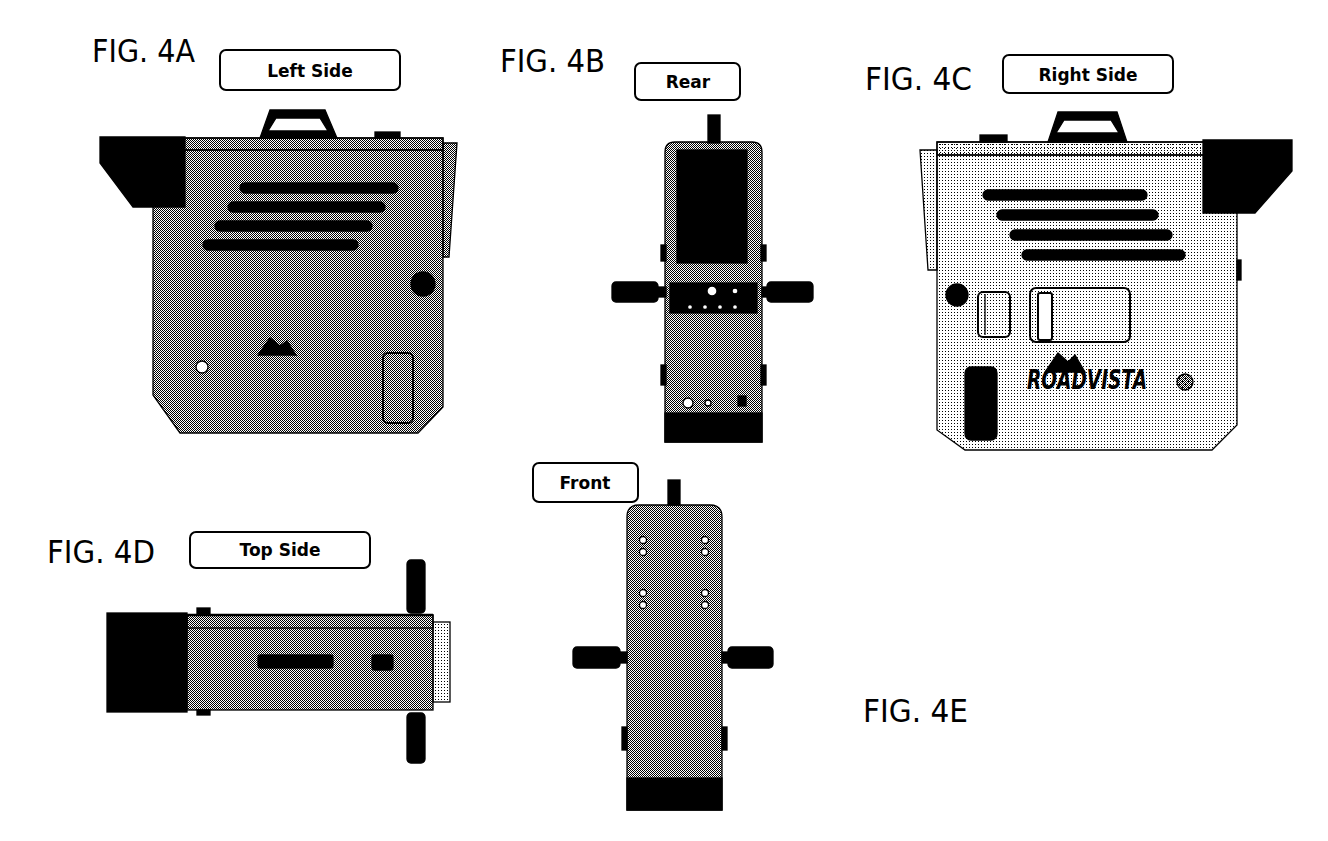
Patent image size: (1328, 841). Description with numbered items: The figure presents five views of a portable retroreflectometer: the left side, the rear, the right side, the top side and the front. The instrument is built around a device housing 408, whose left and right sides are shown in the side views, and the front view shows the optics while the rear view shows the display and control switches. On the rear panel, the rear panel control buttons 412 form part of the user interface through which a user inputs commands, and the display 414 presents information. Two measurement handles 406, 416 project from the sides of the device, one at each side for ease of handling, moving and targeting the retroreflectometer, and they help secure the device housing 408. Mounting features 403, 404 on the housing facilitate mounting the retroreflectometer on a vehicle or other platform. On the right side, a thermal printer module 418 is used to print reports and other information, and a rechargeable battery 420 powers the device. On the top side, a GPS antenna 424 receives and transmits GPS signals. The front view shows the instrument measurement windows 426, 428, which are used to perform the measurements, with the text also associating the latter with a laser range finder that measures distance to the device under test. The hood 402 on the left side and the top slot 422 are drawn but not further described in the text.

In FIG. 4A, the protective hood / visor 402 is at (95, 177).
In FIG. 4A, the mounting feature 403 is at (193, 370).
In FIG. 4A, the mounting feature 404 is at (390, 397).
In FIG. 4A, the measurement handle 406 is at (432, 289).
In FIG. 4A, the device housing 408 is at (442, 177).
In FIG. 4B, the rear panel control buttons 412 is at (695, 293).
In FIG. 4B, the display 414 is at (725, 213).
In FIG. 4B, the measurement handle 416 is at (782, 290).
In FIG. 4C, the thermal printer module 418 is at (970, 323).
In FIG. 4C, the rechargeable battery 420 is at (1065, 325).
In FIG. 4D, the top slot 422 is at (278, 670).
In FIG. 4D, the GPS antenna 424 is at (383, 668).
In FIG. 4E, the instrument measurement window 426 is at (662, 650).
In FIG. 4E, the instrument measurement window 428 is at (702, 532).